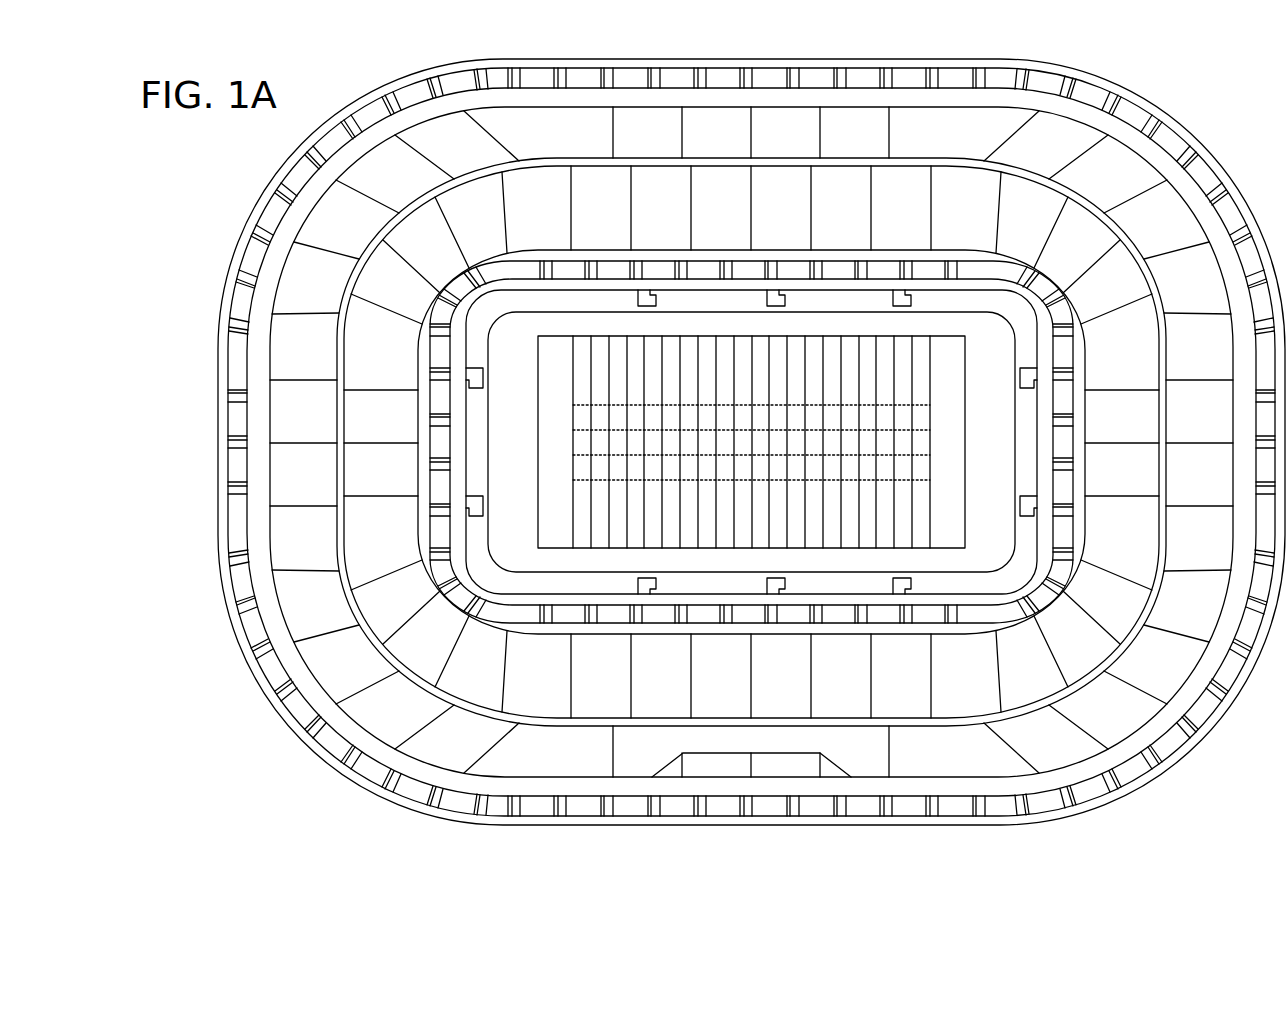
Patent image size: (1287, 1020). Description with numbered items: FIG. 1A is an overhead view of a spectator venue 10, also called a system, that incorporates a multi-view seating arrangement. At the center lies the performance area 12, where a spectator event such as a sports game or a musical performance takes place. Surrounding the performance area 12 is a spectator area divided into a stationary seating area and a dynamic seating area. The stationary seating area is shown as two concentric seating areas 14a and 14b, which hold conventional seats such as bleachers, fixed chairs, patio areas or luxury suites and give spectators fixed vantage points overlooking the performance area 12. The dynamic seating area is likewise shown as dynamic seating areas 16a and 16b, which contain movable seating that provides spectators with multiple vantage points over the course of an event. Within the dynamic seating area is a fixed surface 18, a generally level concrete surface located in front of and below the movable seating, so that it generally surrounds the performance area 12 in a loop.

The spectator venue 10 is at (1214, 93).
The performance area 12 is at (913, 418).
The stationary seating area 14a is at (858, 221).
The stationary seating area 14b is at (877, 144).
The dynamic seating area 16a is at (845, 272).
The dynamic seating area 16b is at (597, 803).
The fixed surface 18 is at (867, 100).